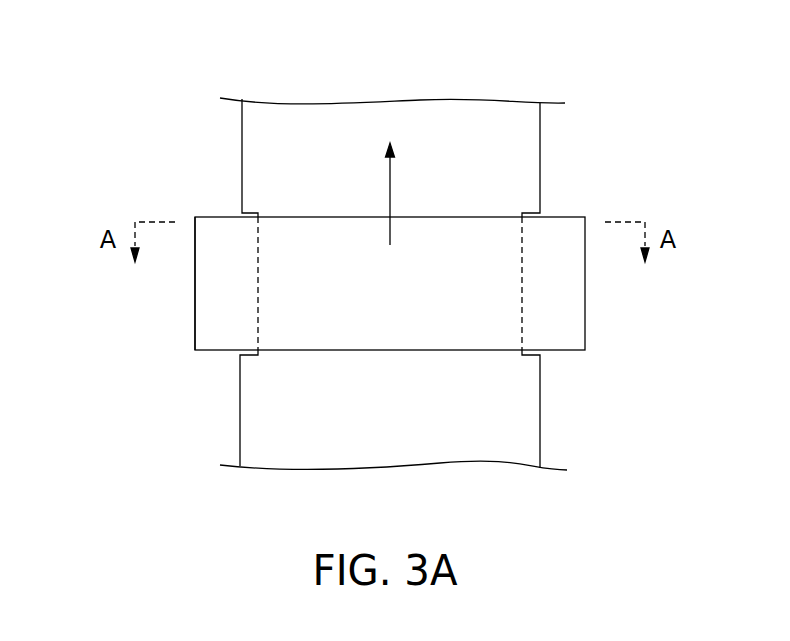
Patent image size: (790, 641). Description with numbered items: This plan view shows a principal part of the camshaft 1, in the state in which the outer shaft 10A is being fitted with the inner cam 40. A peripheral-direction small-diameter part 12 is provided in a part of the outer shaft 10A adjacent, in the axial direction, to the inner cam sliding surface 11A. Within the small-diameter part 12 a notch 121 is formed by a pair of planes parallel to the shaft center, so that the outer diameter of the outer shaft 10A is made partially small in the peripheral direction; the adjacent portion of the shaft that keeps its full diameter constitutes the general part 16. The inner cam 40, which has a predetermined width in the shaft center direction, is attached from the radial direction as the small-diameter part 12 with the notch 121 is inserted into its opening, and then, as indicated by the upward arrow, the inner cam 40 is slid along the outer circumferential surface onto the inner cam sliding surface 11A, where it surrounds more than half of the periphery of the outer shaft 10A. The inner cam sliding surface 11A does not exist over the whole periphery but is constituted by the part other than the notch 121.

The camshaft 1 is at (176, 94).
The general part 16 is at (540, 157).
The outer shaft 10A is at (555, 422).
The peripheral-direction small-diameter part 12 is at (535, 318).
The inner cam 40 is at (188, 333).
The notch 121 is at (258, 271).
The inner cam sliding surface 11A is at (393, 320).